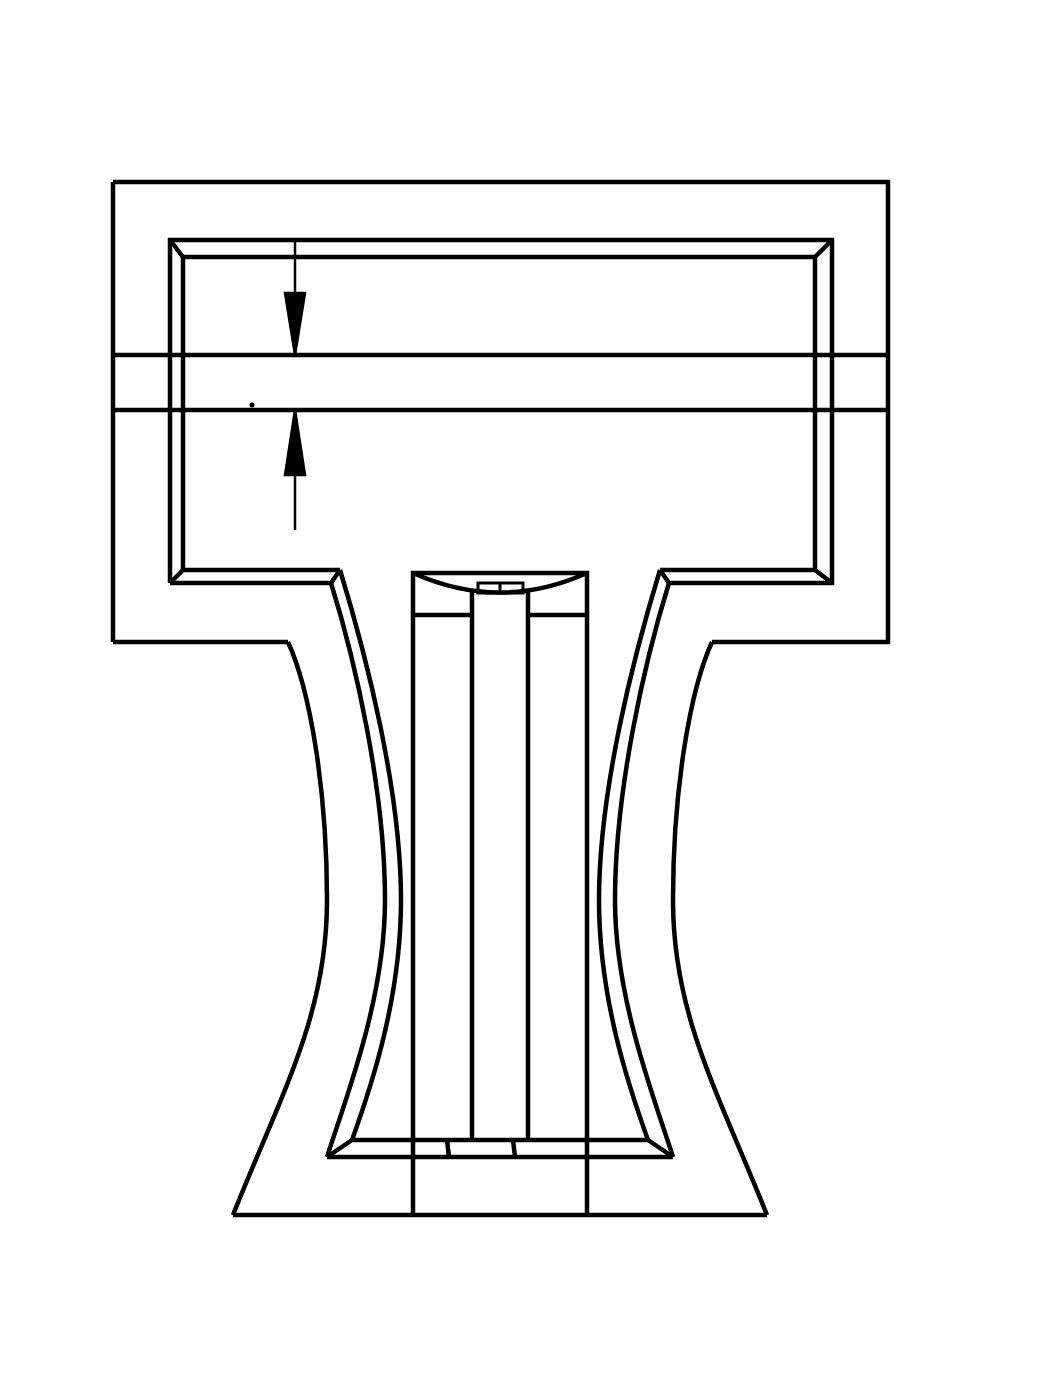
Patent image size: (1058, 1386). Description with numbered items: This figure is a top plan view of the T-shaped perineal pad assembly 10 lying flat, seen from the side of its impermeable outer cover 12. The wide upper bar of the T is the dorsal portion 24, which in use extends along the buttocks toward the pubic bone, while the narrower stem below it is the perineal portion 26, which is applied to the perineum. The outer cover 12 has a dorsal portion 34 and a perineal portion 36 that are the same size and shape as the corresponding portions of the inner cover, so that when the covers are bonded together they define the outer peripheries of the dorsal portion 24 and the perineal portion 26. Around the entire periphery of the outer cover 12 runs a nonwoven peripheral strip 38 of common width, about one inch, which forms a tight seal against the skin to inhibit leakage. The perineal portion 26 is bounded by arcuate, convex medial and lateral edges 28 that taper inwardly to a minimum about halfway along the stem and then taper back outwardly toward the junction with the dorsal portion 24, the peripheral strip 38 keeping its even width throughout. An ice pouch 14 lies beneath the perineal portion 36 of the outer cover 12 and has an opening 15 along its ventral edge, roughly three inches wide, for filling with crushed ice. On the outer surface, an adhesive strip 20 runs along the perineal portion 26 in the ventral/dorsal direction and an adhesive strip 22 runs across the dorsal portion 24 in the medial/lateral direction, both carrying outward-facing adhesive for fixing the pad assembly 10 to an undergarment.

The pad assembly 10 is at (796, 116).
The outer cover 12 is at (488, 287).
The ice pouch 14 is at (436, 758).
The opening 15 is at (523, 1218).
The adhesive strip 20 is at (500, 760).
The adhesive strip 22 is at (783, 375).
The dorsal portion 24 is at (88, 567).
The perineal portion 26 is at (203, 1007).
The arcuate edge 28 is at (322, 908).
The dorsal portion of outer cover 34 is at (120, 300).
The perineal portion of outer cover 36 is at (675, 1020).
The peripheral strip 38 is at (288, 1178).